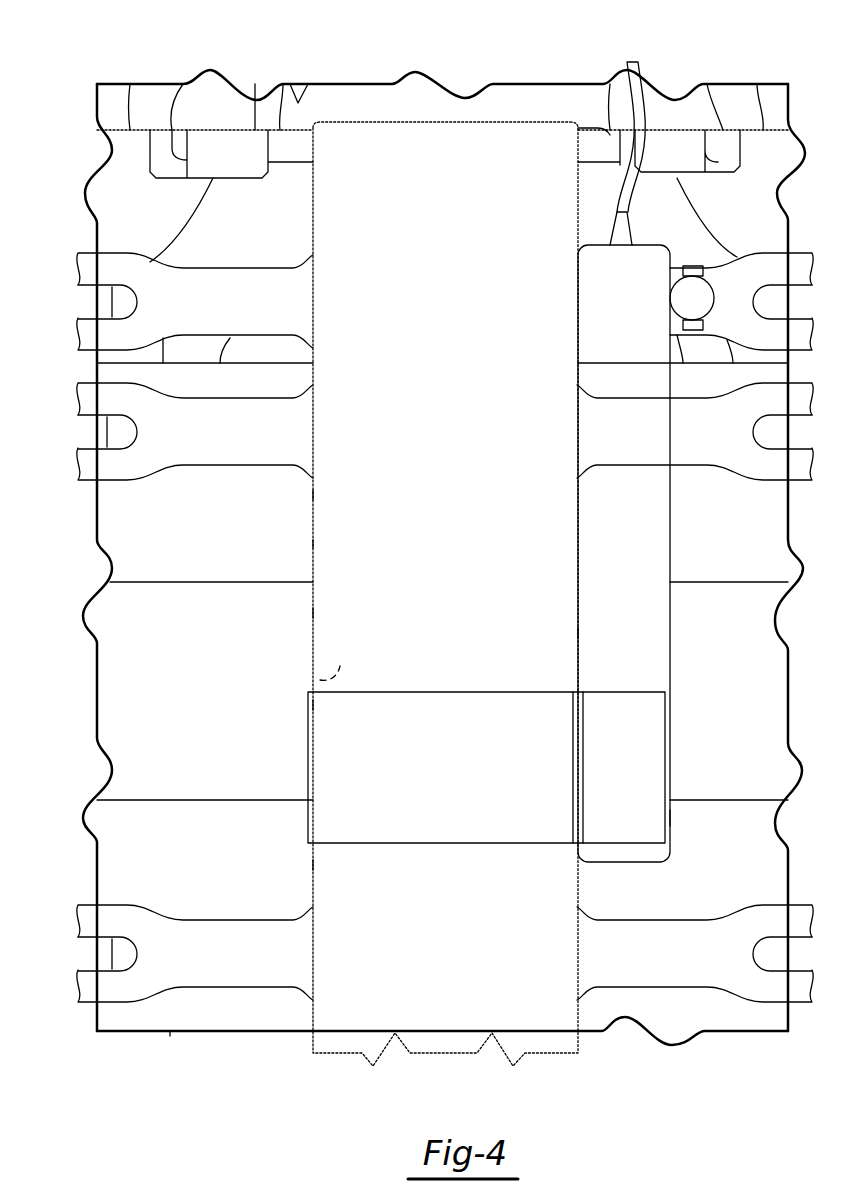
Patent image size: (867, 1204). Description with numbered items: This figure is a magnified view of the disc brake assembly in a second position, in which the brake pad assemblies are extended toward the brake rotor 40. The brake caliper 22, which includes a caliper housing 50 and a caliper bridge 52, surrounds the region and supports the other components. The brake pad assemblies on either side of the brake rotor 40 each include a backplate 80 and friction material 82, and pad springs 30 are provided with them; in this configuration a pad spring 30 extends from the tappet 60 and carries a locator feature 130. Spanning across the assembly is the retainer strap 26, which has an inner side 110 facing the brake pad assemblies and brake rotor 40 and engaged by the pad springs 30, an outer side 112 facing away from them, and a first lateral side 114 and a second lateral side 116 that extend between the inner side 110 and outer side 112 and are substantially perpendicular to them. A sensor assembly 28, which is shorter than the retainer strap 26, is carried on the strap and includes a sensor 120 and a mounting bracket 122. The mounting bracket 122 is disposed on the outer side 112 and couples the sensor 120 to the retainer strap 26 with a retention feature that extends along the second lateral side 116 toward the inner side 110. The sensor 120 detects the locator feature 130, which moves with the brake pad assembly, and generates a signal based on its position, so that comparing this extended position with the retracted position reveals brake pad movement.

The brake caliper 22 is at (727, 100).
The caliper housing 50 is at (727, 104).
The tappet 60 is at (197, 205).
The pad spring 30 is at (212, 311).
The backplate 80 is at (97, 433).
The locator feature 130 is at (700, 292).
The retainer strap 26 is at (436, 380).
The sensor 120 is at (606, 506).
The outer side 112 is at (342, 560).
The second lateral side 116 is at (313, 613).
The inner side 110 is at (313, 680).
The first lateral side 114 is at (578, 633).
The friction material 82 is at (212, 521).
The brake rotor 40 is at (212, 728).
The mounting bracket 122 is at (423, 775).
The sensor assembly 28 is at (672, 826).
The caliper bridge 52 is at (170, 1033).